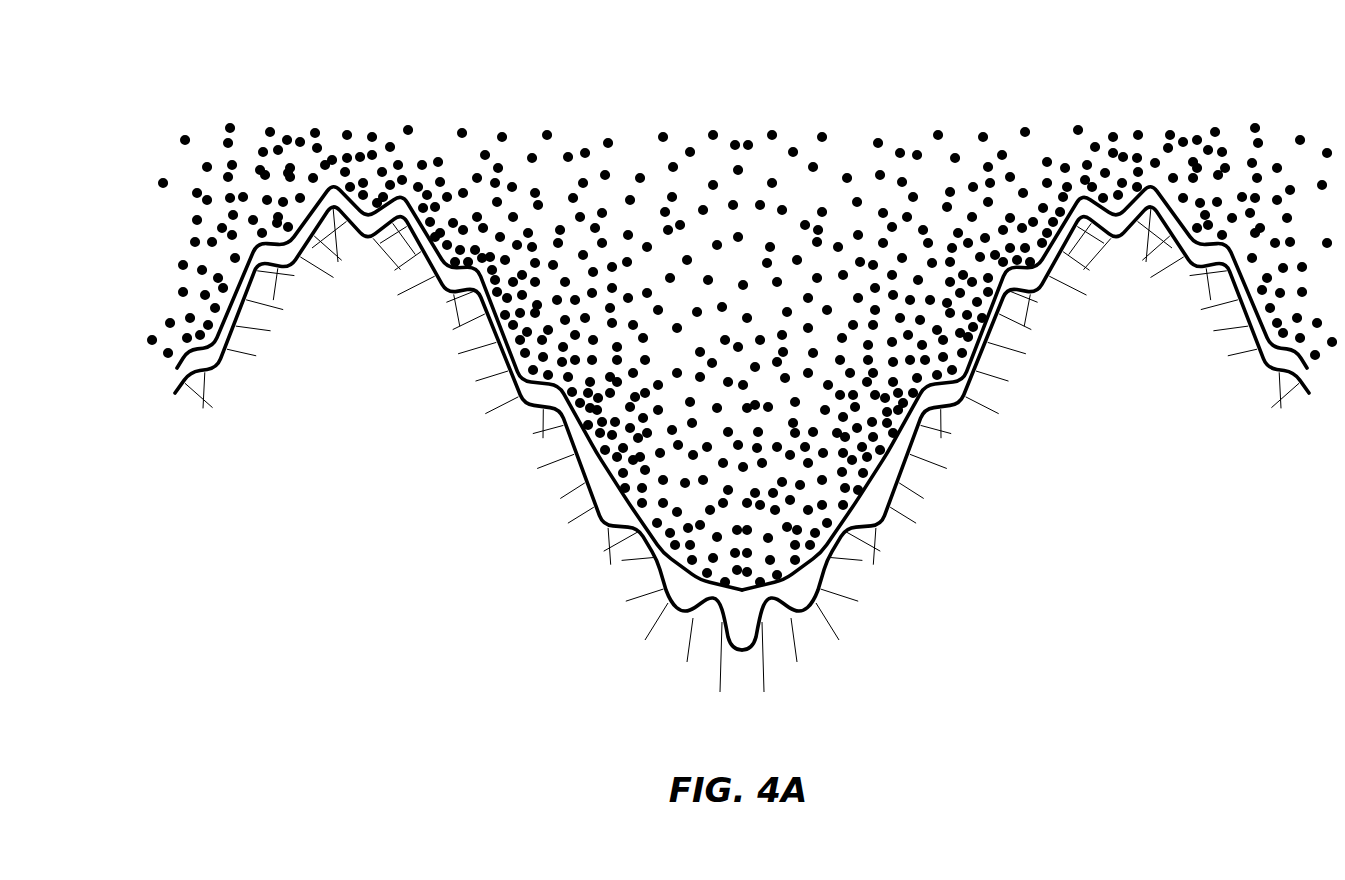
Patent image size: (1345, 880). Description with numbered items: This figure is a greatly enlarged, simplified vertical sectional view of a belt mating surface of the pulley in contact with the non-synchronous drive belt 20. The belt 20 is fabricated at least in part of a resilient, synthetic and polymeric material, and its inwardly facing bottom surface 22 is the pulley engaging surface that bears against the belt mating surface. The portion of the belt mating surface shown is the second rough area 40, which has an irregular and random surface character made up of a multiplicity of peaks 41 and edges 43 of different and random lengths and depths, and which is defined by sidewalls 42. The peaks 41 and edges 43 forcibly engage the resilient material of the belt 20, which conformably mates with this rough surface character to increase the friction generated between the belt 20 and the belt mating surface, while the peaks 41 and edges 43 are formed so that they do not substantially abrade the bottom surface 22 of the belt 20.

The non-synchronous drive belt 20 is at (727, 198).
The bottom surface 22 is at (625, 438).
The second rough area 40 is at (742, 439).
The peaks 41 is at (342, 247).
The sidewalls 42 is at (488, 323).
The edges 43 is at (200, 376).